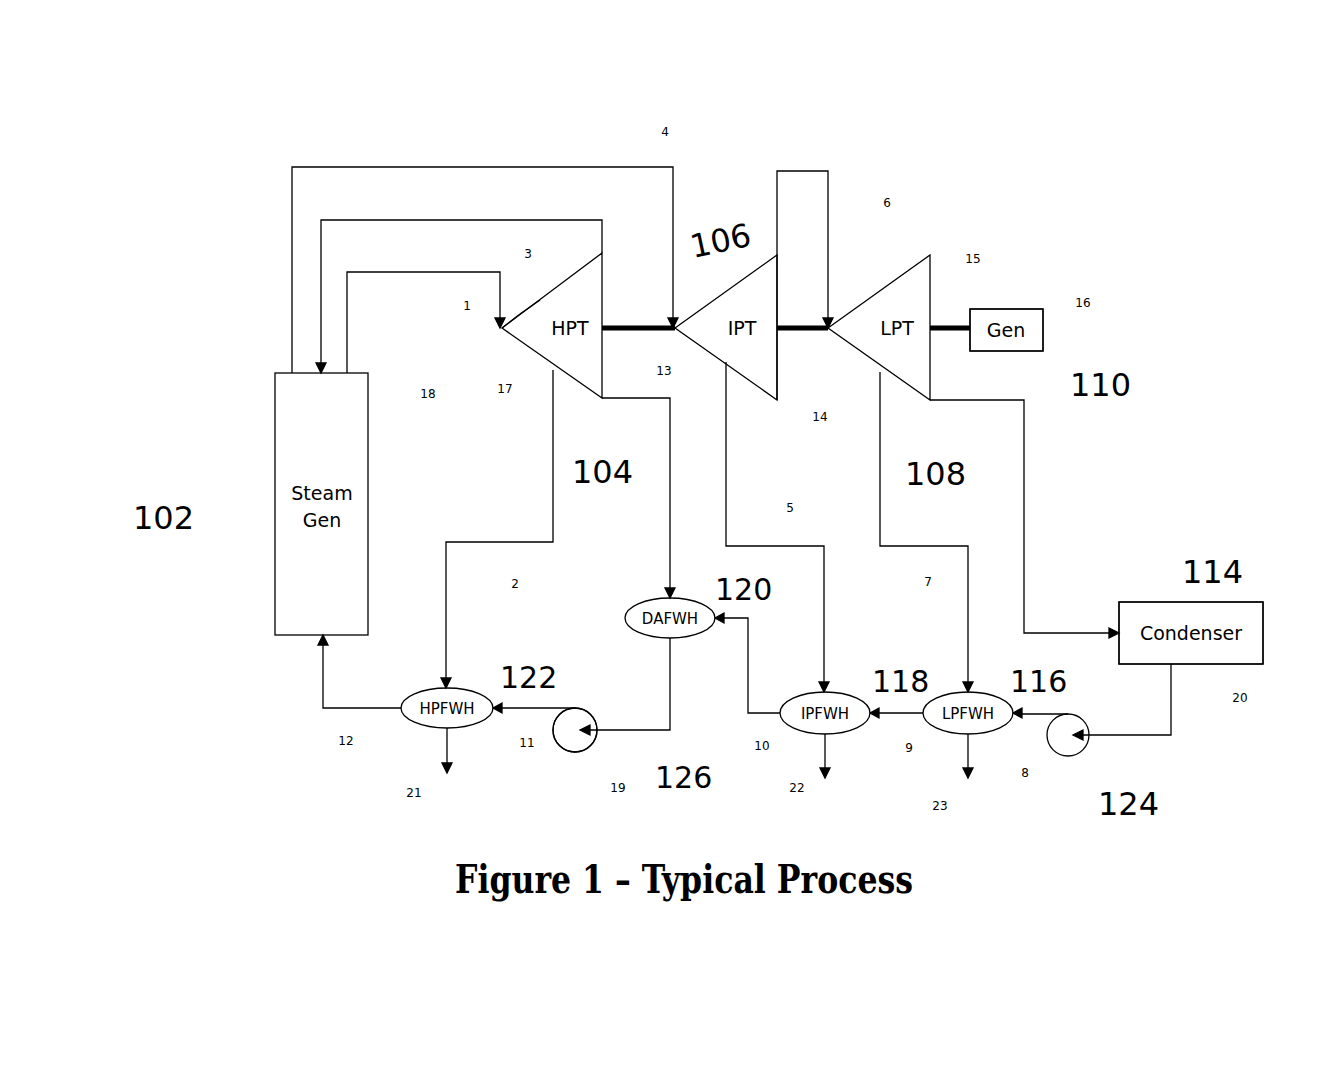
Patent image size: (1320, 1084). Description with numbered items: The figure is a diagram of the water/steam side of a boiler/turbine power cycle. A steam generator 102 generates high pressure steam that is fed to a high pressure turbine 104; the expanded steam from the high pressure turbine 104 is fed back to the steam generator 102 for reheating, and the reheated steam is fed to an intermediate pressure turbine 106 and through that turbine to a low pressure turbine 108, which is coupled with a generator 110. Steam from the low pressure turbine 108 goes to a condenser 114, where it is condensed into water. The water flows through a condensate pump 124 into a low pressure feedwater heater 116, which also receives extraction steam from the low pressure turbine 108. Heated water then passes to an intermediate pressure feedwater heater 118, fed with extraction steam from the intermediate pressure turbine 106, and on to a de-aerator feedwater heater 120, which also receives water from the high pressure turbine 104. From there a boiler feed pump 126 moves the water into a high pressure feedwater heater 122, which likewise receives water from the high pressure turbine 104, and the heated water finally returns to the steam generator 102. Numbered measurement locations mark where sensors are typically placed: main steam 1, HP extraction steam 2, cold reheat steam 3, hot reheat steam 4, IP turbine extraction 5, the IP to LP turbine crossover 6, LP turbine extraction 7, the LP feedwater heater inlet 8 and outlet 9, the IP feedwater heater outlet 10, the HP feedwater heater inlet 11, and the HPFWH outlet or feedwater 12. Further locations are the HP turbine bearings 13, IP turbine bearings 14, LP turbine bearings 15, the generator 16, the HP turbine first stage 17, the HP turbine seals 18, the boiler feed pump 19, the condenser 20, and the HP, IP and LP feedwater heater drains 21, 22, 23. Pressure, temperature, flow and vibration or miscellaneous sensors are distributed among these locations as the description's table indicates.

The main steam measurement location 1 is at (468, 293).
The HP extraction steam measurement location 2 is at (518, 571).
The cold reheat steam measurement location 3 is at (531, 241).
The hot reheat steam measurement location 4 is at (655, 143).
The IP turbine extraction measurement location 5 is at (779, 519).
The IP to LP turbine crossover measurement location 6 is at (866, 205).
The LP turbine extraction measurement location 7 is at (931, 569).
The LP FW heater inlet measurement location 8 is at (1036, 762).
The LP FW heater outlet measurement location 9 is at (910, 735).
The IP FW heater outlet measurement location 10 is at (761, 733).
The HP FW heater inlet measurement location 11 is at (527, 730).
The HPFWH outlet/feedwater measurement location 12 is at (348, 728).
The HP turbine bearings measurement location 13 is at (642, 353).
The IP turbine bearings measurement location 14 is at (813, 399).
The LP turbine bearings measurement location 15 is at (961, 277).
The generator measurement location 16 is at (1070, 313).
The HP turbine first stage measurement location 17 is at (509, 376).
The HP turbine seals measurement location 18 is at (448, 386).
The boiler feed pump measurement location 19 is at (611, 776).
The condenser measurement location 20 is at (1229, 686).
The HP FW heater drains measurement location 21 is at (428, 783).
The IP FW heater drains measurement location 22 is at (813, 779).
The LP FW heater drains measurement location 23 is at (956, 796).
The steam generator 102 is at (264, 505).
The high pressure turbine 104 is at (577, 432).
The intermediate pressure turbine 106 is at (712, 300).
The low pressure turbine 108 is at (905, 432).
The generator 110 is at (1060, 375).
The condenser 114 is at (1172, 578).
The low pressure feedwater heater 116 is at (1003, 680).
The intermediate pressure feedwater heater 118 is at (866, 680).
The de-aerator feedwater heater 120 is at (708, 586).
The high pressure feedwater heater 122 is at (495, 668).
The condensate pump 124 is at (1086, 792).
The boiler feed pump 126 is at (655, 755).